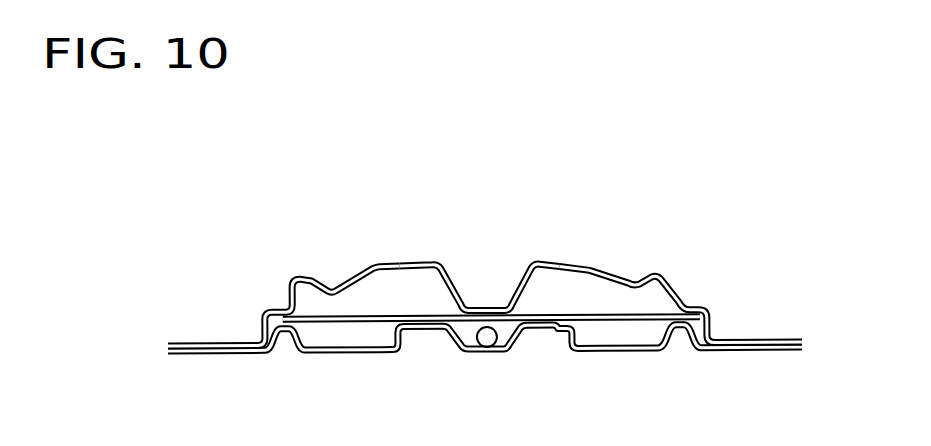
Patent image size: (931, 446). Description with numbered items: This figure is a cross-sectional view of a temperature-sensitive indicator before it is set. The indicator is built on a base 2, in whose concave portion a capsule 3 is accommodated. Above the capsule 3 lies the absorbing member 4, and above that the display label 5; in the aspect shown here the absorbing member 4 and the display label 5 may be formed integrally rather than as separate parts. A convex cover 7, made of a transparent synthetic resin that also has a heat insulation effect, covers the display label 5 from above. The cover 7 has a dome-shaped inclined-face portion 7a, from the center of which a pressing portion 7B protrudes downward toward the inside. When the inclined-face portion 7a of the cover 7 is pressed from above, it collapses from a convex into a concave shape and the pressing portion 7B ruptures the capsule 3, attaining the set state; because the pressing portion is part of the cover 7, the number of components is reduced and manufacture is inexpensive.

The base 2 is at (403, 346).
The capsule 3 is at (487, 338).
The absorbing member 4 is at (517, 325).
The display label 5 is at (650, 312).
The cover 7 is at (484, 267).
The pressing portion 7B is at (458, 293).
The inclined-face portion 7a is at (577, 268).